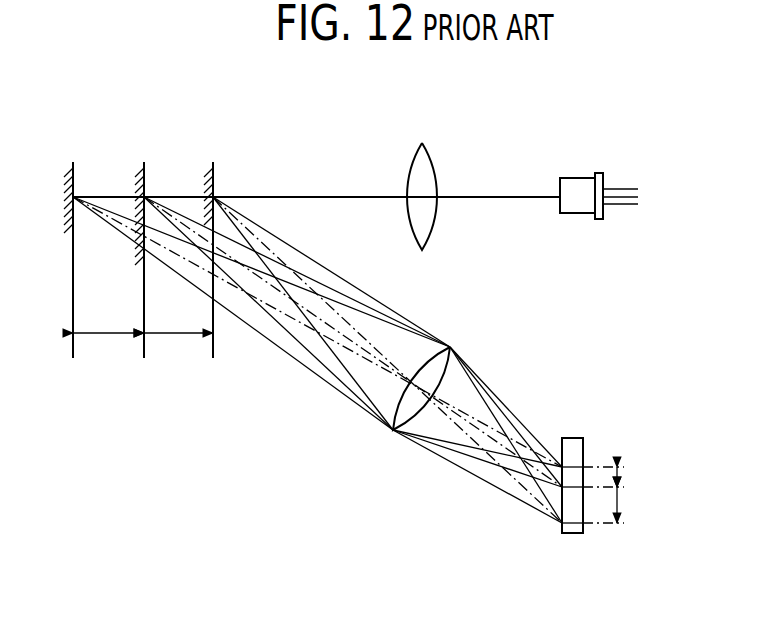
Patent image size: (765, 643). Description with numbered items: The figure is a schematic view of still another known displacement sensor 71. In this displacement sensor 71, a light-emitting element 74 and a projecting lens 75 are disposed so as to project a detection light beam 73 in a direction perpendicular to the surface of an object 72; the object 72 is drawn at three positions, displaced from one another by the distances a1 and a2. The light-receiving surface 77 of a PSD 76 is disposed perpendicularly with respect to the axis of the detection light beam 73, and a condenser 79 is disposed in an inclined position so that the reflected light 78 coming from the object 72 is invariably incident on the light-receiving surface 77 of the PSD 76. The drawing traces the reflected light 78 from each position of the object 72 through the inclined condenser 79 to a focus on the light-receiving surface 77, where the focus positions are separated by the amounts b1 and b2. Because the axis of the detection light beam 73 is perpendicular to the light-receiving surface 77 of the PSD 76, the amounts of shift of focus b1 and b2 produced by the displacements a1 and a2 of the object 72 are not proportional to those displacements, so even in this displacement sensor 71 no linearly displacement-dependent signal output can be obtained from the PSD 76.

The displacement sensor 71 is at (574, 301).
The object 72 is at (77, 172).
The detection light beam 73 is at (252, 197).
The light-emitting element 74 is at (573, 207).
The projecting lens 75 is at (417, 173).
The PSD 76 is at (572, 438).
The light-receiving surface 77 is at (560, 522).
The reflected light 78 is at (281, 361).
The condenser 79 is at (452, 353).